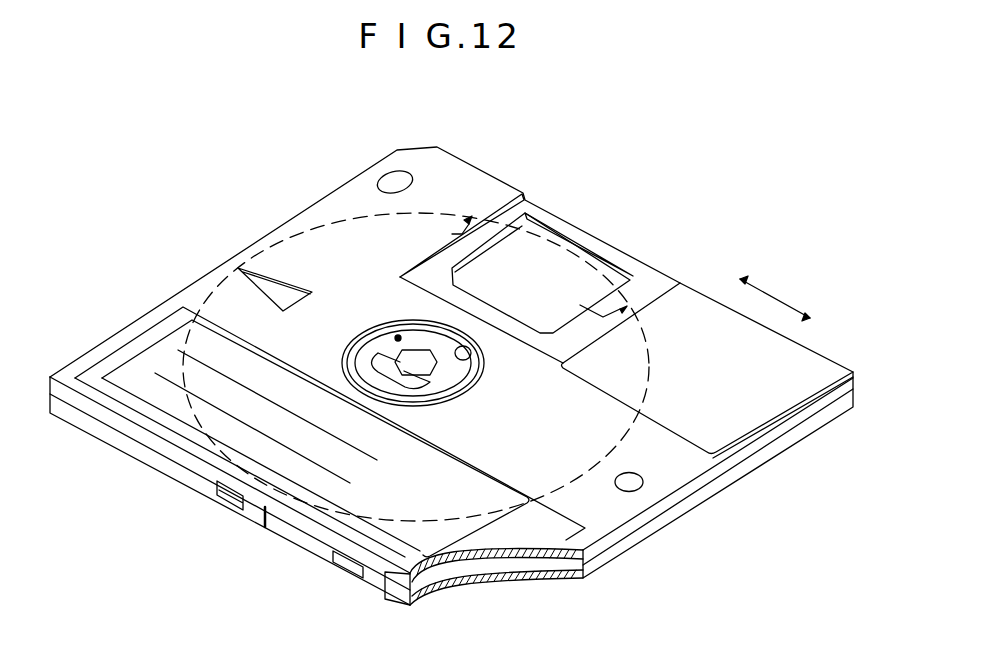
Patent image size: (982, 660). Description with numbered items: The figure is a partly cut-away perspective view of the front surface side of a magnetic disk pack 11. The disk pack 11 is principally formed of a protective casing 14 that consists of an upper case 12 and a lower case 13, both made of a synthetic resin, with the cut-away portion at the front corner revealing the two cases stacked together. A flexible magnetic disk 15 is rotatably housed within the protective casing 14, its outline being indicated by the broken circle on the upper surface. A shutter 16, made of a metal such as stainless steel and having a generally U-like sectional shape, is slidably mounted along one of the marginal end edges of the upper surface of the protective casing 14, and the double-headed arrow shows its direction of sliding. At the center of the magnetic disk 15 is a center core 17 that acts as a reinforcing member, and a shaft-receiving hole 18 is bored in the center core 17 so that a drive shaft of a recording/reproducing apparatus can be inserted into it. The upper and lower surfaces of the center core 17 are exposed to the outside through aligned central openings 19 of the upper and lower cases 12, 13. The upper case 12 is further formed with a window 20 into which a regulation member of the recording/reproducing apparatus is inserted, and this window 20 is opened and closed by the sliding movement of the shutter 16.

The magnetic disk pack 11 is at (632, 190).
The upper case 12 is at (697, 457).
The lower case 13 is at (715, 487).
The protective casing 14 is at (827, 476).
The flexible magnetic disk 15 is at (558, 260).
The shutter 16 is at (802, 367).
The center core 17 is at (445, 352).
The shaft-receiving hole 18 is at (395, 345).
The central openings 19 is at (483, 350).
The window 20 is at (605, 284).